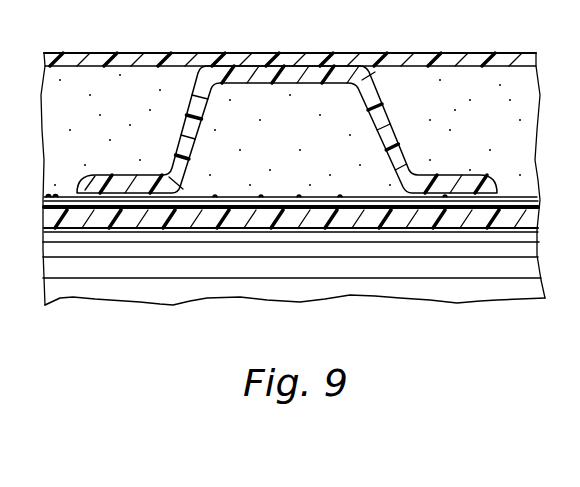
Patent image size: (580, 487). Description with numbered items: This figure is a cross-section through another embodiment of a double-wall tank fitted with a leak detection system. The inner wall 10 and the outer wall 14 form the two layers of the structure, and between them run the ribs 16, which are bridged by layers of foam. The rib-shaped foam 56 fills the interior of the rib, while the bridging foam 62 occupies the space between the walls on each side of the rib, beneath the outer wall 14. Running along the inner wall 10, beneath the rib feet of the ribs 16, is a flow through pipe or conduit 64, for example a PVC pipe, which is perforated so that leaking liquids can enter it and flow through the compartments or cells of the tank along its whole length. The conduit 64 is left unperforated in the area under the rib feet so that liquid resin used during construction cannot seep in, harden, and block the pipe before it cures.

The inner wall 10 is at (137, 217).
The outer wall 14 is at (405, 62).
The ribs 16 is at (272, 77).
The rib-shaped foam 56 is at (302, 103).
The bridging foam 62 is at (140, 86).
The flow through pipe or conduit 64 is at (240, 210).